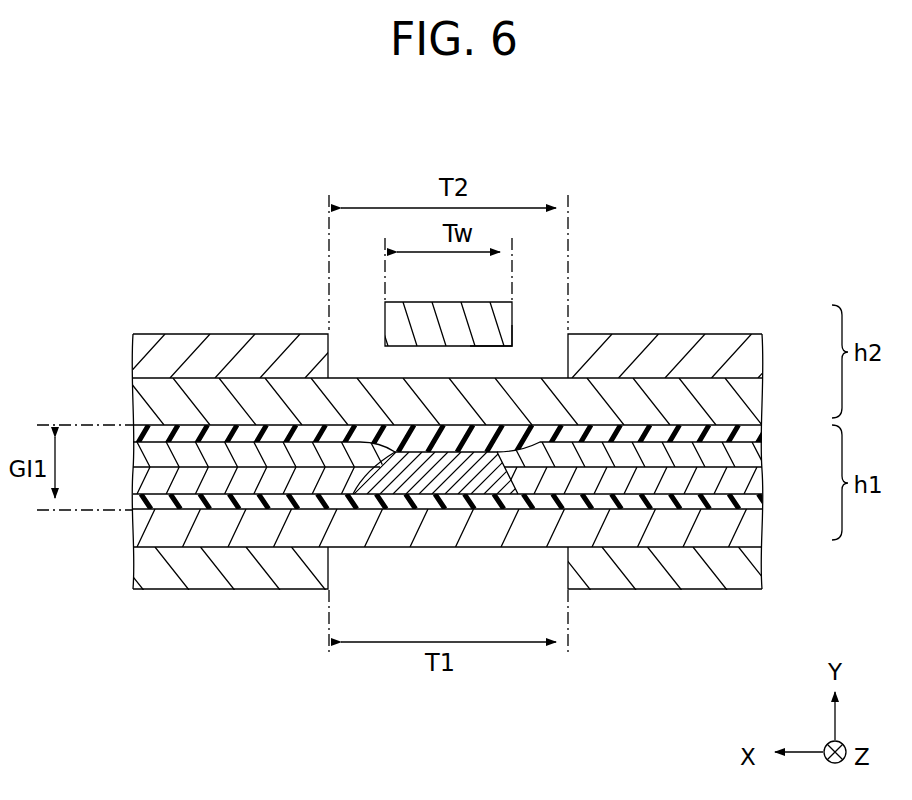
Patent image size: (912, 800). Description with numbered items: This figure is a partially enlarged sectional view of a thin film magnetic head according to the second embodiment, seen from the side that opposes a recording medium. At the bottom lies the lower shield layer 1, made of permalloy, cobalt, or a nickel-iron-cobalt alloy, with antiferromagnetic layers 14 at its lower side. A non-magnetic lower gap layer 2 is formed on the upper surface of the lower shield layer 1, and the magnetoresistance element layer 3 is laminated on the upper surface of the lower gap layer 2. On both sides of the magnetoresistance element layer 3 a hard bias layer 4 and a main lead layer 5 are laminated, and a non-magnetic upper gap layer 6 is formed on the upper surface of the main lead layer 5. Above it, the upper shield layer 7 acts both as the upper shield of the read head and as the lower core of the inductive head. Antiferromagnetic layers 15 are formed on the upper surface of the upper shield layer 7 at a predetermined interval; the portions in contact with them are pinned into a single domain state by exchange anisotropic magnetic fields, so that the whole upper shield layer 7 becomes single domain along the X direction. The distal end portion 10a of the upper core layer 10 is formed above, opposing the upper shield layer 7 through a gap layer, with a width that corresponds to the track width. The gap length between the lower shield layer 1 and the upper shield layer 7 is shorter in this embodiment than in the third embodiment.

The lower shield layer 1 is at (755, 524).
The lower gap layer 2 is at (757, 503).
The magnetoresistance element layer 3 is at (446, 472).
The hard bias layer 4 is at (757, 480).
The main lead layer 5 is at (757, 455).
The upper gap layer 6 is at (757, 432).
The upper shield layer (lower core layer) 7 is at (750, 398).
The upper core layer 10 is at (422, 300).
The distal end portion 10a is at (508, 323).
The antiferromagnetic layers 14 is at (200, 565).
The antiferromagnetic layers 15 is at (234, 347).